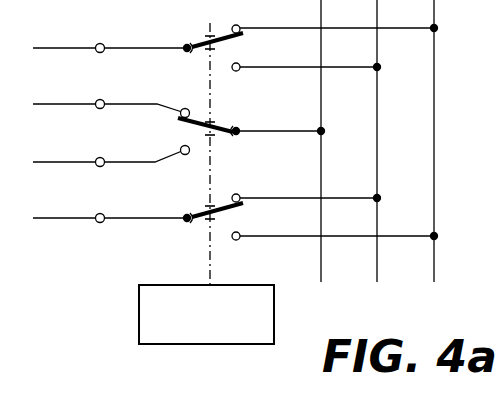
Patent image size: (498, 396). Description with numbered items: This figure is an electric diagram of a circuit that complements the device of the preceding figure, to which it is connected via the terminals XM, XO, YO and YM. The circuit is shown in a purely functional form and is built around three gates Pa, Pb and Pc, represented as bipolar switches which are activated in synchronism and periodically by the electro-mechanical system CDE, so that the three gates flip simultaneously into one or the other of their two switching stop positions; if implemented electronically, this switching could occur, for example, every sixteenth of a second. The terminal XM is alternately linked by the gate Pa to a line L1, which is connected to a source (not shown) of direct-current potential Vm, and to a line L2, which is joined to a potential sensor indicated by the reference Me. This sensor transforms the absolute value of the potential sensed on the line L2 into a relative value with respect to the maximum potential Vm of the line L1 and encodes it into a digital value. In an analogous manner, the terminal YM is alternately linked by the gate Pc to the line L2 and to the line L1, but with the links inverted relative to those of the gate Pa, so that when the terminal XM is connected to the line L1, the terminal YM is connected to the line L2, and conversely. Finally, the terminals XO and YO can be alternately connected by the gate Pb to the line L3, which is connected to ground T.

The terminal X_M XM is at (108, 33).
The terminal X_O XO is at (111, 94).
The terminal Y_O YO is at (111, 148).
The terminal Y_M YM is at (108, 203).
The gate P_a Pa is at (208, 40).
The gate P_b Pb is at (215, 114).
The gate P_c Pc is at (207, 210).
The line L_1 L1 is at (436, 101).
The line L_2 L2 is at (379, 101).
The line L_3 L3 is at (323, 101).
The ground T is at (319, 155).
The potential sensor Me is at (375, 156).
The direct-current potential V_M Vm is at (435, 156).
The electro-mechanical system CDE is at (206, 314).